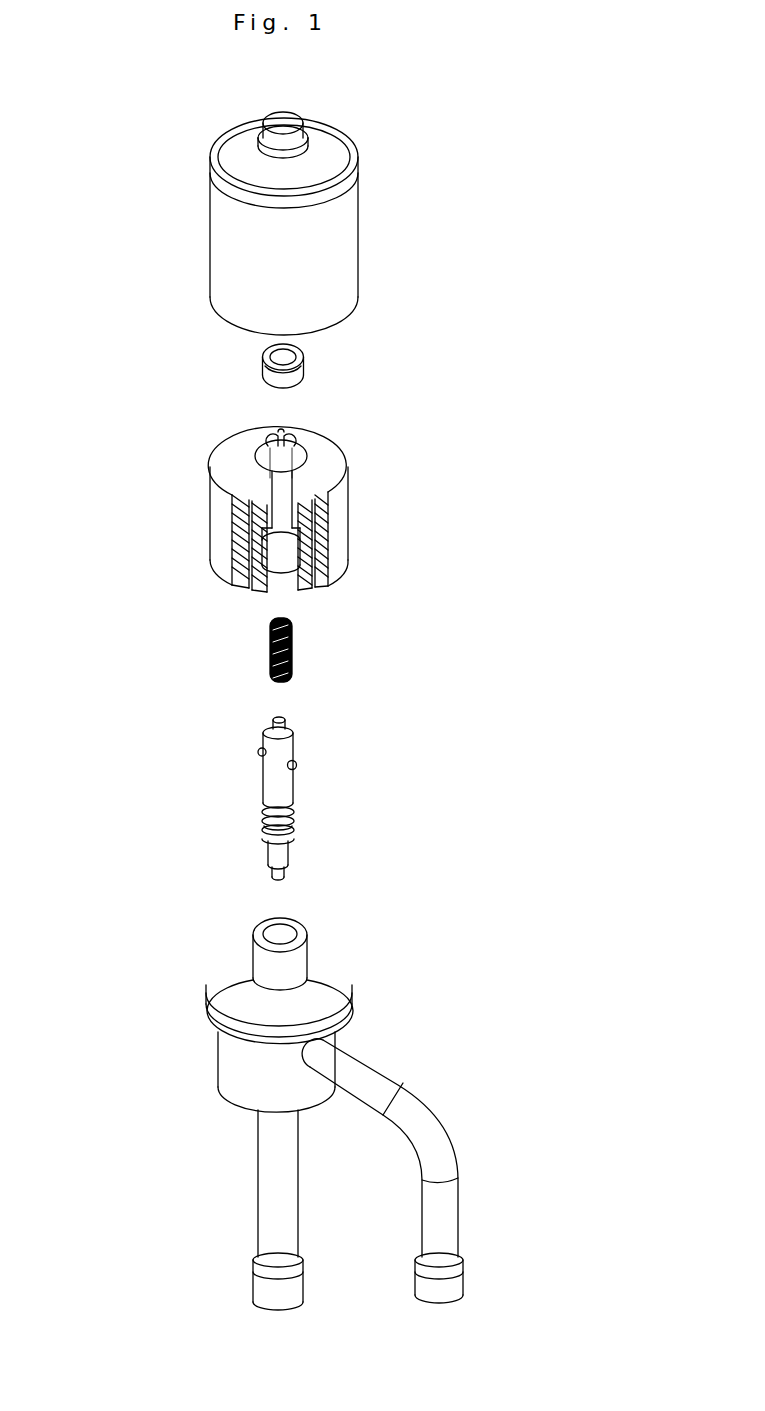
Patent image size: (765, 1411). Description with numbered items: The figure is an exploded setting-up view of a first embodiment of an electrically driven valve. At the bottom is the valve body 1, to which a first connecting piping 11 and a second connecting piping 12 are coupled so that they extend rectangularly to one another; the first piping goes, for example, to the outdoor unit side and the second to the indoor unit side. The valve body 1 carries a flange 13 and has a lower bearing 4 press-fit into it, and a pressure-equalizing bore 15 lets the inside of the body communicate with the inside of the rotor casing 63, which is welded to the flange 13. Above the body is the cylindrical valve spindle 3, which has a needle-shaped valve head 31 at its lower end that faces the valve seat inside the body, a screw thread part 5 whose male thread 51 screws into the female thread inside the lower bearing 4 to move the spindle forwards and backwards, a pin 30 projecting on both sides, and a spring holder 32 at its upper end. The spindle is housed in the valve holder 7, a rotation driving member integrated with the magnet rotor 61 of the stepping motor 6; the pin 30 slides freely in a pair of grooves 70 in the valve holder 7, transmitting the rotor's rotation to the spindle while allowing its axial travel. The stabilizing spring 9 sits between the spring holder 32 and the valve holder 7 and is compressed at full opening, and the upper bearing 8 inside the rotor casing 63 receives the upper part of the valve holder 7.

The valve body 1 is at (336, 1104).
The valve spindle 3 is at (266, 784).
The lower bearing 4 is at (220, 944).
The screw thread part 5 is at (339, 836).
The stepping motor 6 is at (228, 509).
The valve holder 7 is at (264, 448).
The upper bearing 8 is at (304, 368).
The stabilizing spring 9 is at (293, 648).
The first connecting piping 11 is at (270, 1198).
The second connecting piping 12 is at (448, 1212).
The flange 13 is at (207, 1000).
The pressure-equalizing bore 15 is at (250, 968).
The pin 30 is at (258, 750).
The valve head 31 is at (271, 870).
The spring holder 32 is at (286, 722).
The male thread 51 is at (293, 830).
The magnet rotor 61 is at (213, 515).
The rotor casing 63 is at (208, 222).
The grooves 70 is at (240, 540).